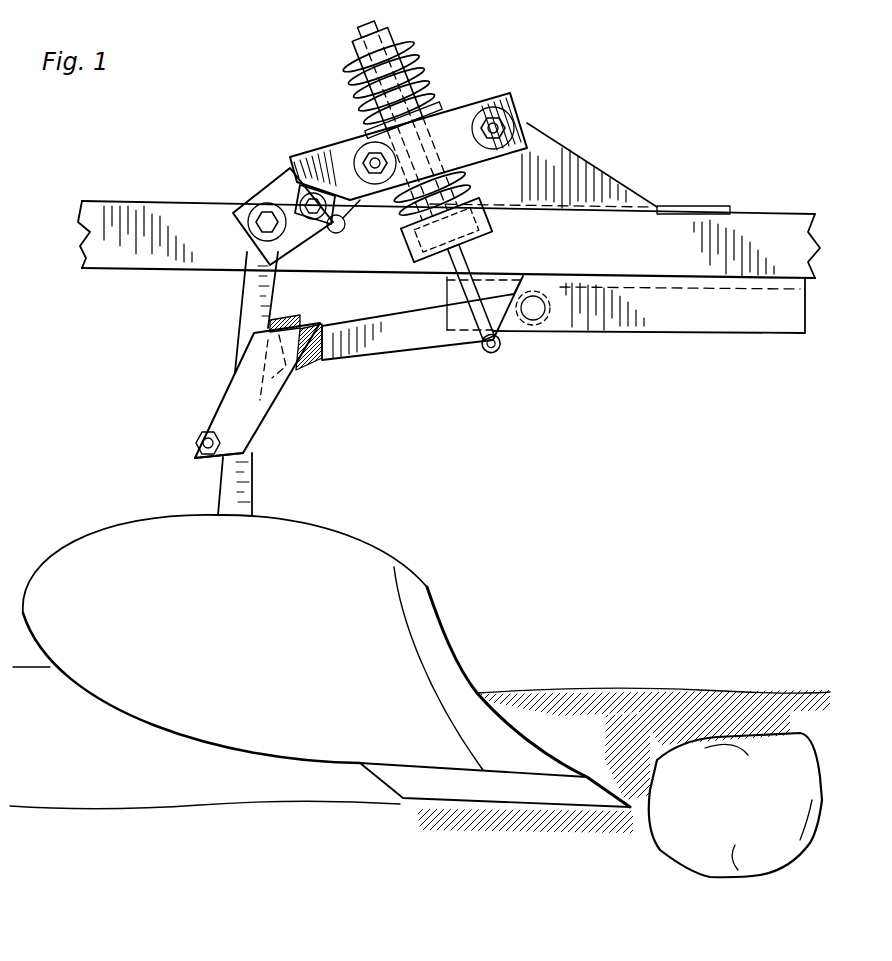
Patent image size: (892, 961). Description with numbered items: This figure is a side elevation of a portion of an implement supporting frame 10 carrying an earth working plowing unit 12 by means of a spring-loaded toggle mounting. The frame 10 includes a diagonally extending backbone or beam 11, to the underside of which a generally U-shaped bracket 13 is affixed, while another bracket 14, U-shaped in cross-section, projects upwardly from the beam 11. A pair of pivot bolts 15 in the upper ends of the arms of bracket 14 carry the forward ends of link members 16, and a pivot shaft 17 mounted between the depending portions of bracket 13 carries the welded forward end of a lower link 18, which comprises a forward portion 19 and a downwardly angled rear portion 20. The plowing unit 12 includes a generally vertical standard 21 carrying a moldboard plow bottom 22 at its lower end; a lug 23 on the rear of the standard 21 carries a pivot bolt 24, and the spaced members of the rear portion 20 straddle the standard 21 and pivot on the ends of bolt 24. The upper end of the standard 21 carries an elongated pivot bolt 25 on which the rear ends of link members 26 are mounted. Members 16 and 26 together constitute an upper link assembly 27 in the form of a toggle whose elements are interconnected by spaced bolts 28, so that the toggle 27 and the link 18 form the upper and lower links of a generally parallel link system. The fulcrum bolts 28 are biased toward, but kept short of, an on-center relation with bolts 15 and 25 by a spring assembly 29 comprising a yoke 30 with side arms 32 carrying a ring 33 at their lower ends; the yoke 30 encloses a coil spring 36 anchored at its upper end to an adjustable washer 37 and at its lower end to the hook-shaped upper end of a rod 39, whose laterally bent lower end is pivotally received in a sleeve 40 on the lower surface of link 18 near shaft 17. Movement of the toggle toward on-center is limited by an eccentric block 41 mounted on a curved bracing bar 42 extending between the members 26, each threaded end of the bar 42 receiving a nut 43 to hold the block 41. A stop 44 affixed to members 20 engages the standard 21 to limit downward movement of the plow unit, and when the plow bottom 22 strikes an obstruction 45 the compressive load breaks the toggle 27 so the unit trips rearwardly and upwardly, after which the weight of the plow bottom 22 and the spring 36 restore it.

The implement supporting frame 10 is at (756, 184).
The beam 11 is at (776, 246).
The plowing unit 12 is at (205, 394).
The U-shaped bracket 13 is at (628, 320).
The bracket 14 is at (580, 176).
The pivot bolts 15 is at (506, 116).
The link members 16 is at (466, 105).
The pivot shaft 17 is at (535, 321).
The link 18 is at (330, 373).
The forward portion 19 is at (420, 342).
The rear portion 20 is at (278, 398).
The standard 21 is at (247, 296).
The moldboard plow bottom 22 is at (377, 584).
The lug 23 is at (194, 433).
The pivot bolt 24 is at (195, 452).
The pivot bolt 25 is at (256, 222).
The link members 26 is at (285, 180).
The upper link assembly 27 is at (419, 217).
The bolts 28 is at (368, 158).
The spring assembly 29 is at (332, 71).
The yoke 30 is at (352, 38).
The side arms 32 is at (405, 78).
The ring 33 is at (482, 220).
The coil spring 36 is at (424, 98).
The washer 37 is at (398, 44).
The rod 39 is at (452, 256).
The sleeve 40 is at (490, 351).
The eccentric block 41 is at (333, 234).
The curved bracing bar 42 is at (347, 220).
The nut 43 is at (308, 226).
The stop 44 is at (292, 318).
The obstruction 45 is at (677, 843).